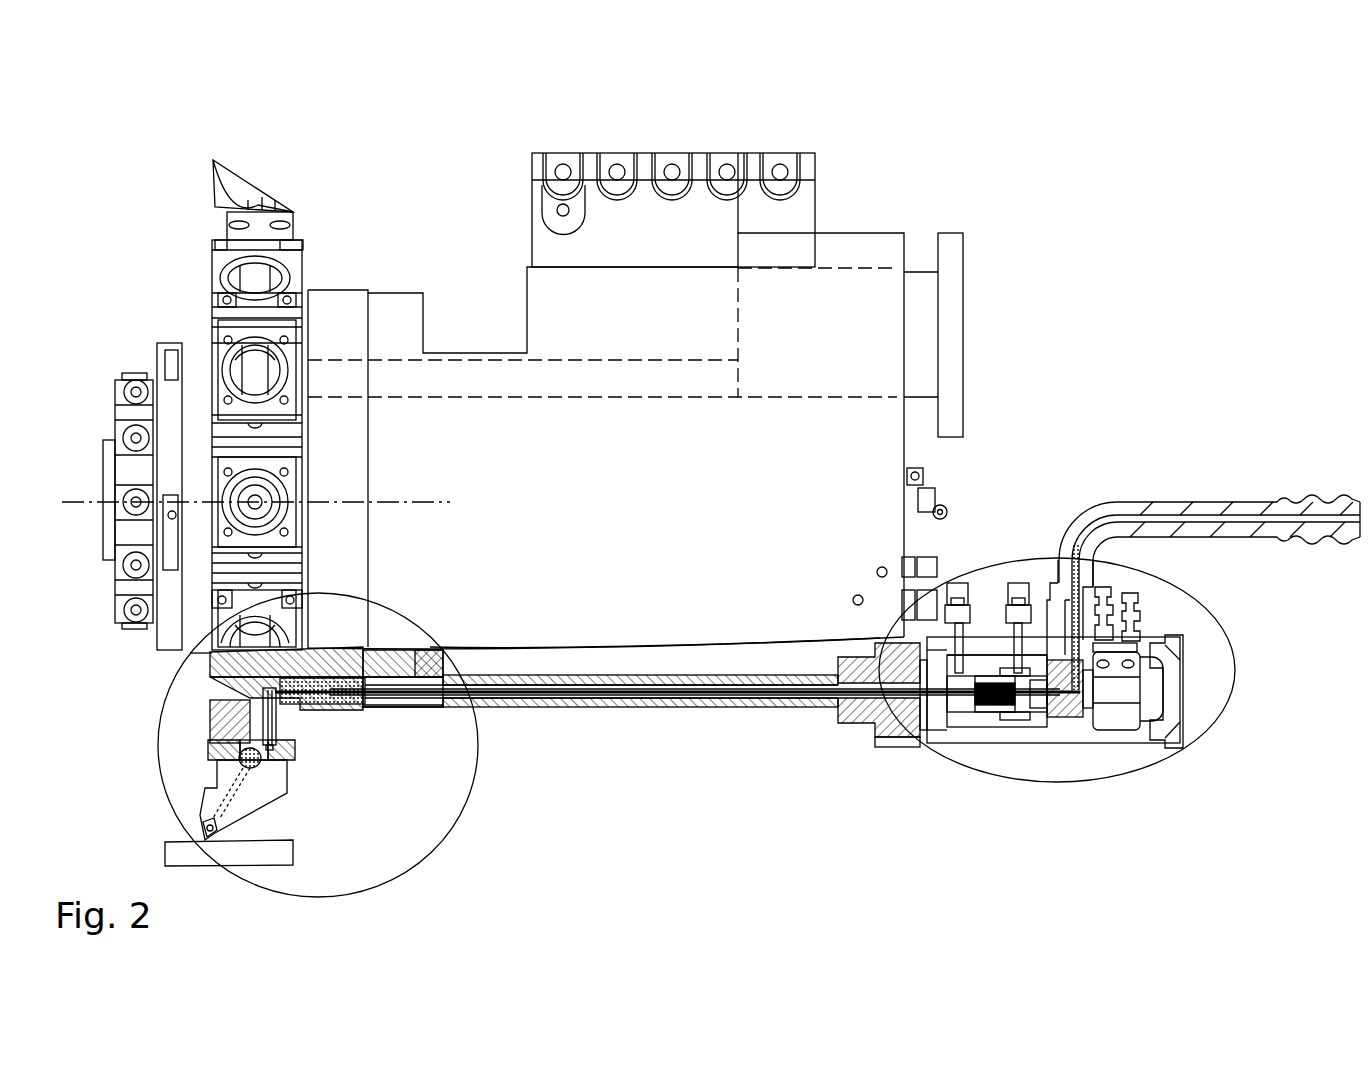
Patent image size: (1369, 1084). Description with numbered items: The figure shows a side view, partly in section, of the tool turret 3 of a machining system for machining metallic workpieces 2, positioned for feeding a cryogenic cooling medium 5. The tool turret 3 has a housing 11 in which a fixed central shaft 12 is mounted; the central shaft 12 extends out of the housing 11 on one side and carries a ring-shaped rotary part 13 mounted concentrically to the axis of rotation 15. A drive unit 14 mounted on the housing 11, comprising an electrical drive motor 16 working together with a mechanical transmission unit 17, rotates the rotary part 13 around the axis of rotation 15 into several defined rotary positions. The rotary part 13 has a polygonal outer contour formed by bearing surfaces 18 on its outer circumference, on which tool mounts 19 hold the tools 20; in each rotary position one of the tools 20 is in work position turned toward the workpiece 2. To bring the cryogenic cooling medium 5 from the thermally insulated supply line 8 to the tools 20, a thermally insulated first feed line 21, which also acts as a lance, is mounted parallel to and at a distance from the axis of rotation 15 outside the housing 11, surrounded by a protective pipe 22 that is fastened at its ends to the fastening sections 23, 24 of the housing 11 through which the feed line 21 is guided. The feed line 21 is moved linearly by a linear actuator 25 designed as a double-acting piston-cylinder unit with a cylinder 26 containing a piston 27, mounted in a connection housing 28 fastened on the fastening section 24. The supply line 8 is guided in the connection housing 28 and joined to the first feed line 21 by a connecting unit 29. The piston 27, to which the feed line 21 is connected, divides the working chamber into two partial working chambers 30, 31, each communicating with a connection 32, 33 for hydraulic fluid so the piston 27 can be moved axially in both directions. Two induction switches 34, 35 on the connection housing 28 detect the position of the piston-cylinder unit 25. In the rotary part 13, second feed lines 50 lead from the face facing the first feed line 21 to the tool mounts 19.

The workpiece 2 is at (208, 853).
The tool turret 3 is at (656, 148).
The cryogenic cooling medium 5 is at (1222, 515).
The supply line 8 is at (1281, 505).
The housing 11 is at (628, 625).
The central shaft 12 is at (160, 352).
The rotary part 13 is at (205, 290).
The drive unit 14 is at (950, 225).
The axis of rotation 15 is at (120, 505).
The electrical drive motor 16 is at (855, 285).
The mechanical transmission unit 17 is at (490, 365).
The bearing surfaces 18 is at (215, 745).
The tool mounts 19 is at (222, 760).
The tools 20 is at (242, 165).
The first feed line 21 is at (768, 710).
The shaft 22 is at (697, 707).
The fastening section 23 is at (400, 706).
The fastening section 24 is at (852, 737).
The linear actuator 25 is at (982, 620).
The cylinder 26 is at (987, 713).
The piston 27 is at (963, 707).
The connection housing 28 is at (1135, 740).
The connecting unit 29 is at (1070, 713).
The partial working chamber 30 is at (910, 740).
The partial working chamber 31 is at (1013, 705).
The connection 32 is at (967, 582).
The connection 33 is at (1018, 587).
The induction switch 34 is at (1108, 593).
The induction switch 35 is at (1135, 598).
The second feed lines 50 is at (290, 722).